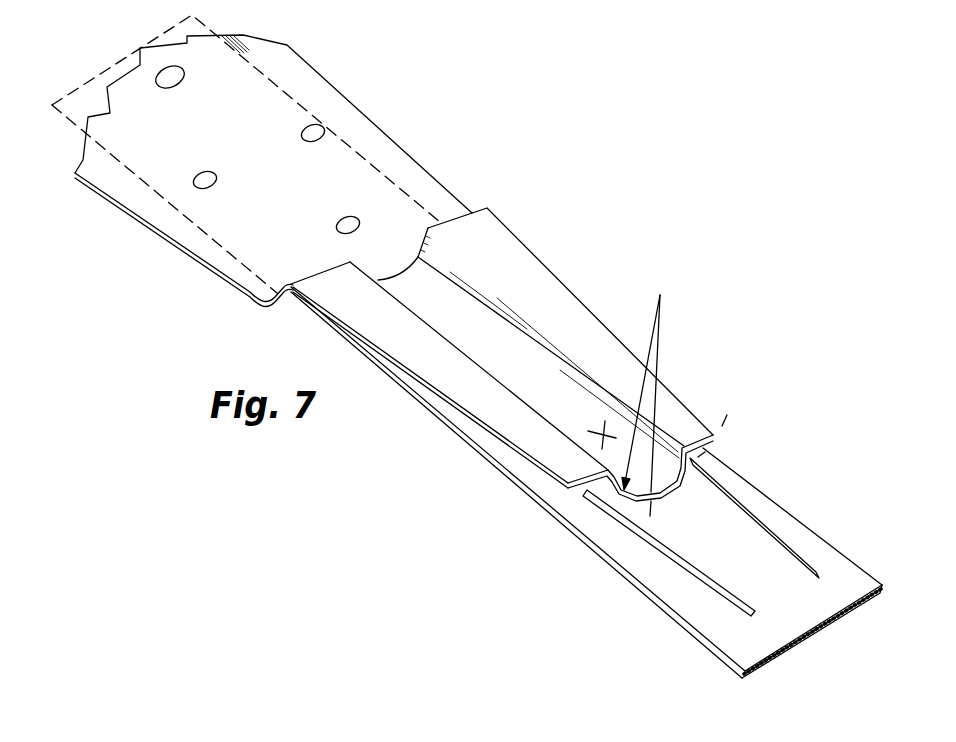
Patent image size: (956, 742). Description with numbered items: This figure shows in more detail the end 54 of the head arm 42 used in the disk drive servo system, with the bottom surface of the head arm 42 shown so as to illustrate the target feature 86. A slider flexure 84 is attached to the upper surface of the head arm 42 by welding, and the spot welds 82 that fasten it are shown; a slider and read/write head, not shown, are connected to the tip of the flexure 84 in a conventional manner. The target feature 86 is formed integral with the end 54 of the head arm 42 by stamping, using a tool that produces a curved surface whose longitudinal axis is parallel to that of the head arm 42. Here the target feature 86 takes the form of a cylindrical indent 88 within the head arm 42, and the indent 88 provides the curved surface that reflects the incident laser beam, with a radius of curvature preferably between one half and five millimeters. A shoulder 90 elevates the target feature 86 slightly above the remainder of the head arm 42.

The head arm 42 is at (262, 160).
The spot welds 82 is at (303, 180).
The shoulder 90 is at (545, 296).
The cylindrical indent 88 is at (551, 343).
The target feature 86 is at (538, 389).
The end of head arm 54 is at (586, 470).
The slider flexure 84 is at (687, 537).